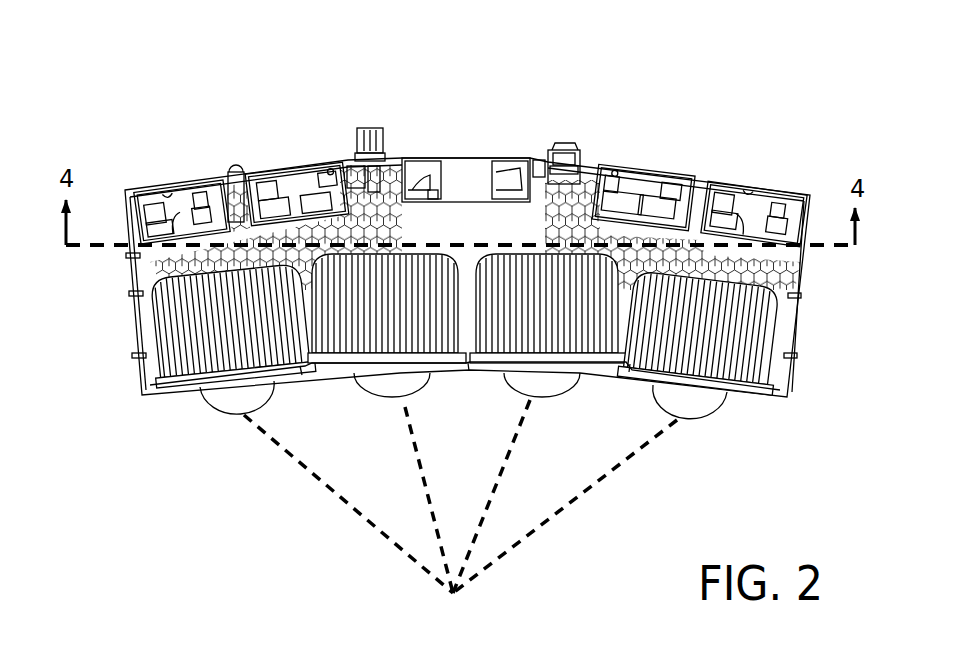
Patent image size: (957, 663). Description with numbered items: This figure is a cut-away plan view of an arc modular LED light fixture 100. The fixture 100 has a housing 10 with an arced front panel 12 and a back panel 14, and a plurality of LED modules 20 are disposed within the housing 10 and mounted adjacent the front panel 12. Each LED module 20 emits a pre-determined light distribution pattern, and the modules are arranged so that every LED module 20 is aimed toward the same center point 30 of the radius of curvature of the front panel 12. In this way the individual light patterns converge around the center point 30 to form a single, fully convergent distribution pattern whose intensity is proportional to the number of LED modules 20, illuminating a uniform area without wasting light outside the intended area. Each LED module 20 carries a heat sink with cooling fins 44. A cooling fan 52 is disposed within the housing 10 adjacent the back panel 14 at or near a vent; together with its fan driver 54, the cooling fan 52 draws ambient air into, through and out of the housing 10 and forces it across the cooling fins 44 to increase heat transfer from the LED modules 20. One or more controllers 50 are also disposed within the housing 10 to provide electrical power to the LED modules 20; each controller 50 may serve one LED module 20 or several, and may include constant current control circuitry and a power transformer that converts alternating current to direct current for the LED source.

The arc modular LED light fixture 100 is at (130, 128).
The housing 10 is at (120, 323).
The front panel 12 is at (158, 400).
The back panel 14 is at (153, 188).
The LED module 20 is at (782, 325).
The center point 30 is at (458, 595).
The cooling fins 44 is at (208, 330).
The controller 50 is at (642, 177).
The cooling fan 52 is at (430, 175).
The fan driver 54 is at (579, 175).